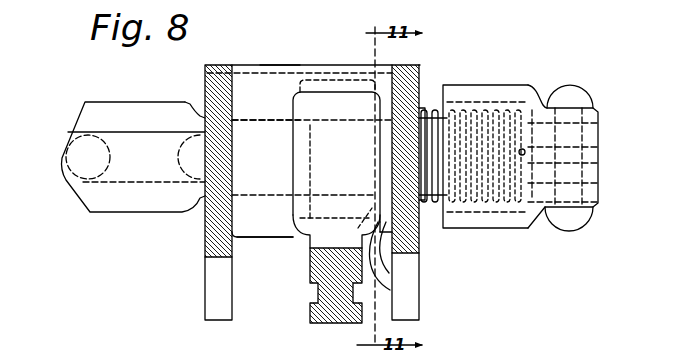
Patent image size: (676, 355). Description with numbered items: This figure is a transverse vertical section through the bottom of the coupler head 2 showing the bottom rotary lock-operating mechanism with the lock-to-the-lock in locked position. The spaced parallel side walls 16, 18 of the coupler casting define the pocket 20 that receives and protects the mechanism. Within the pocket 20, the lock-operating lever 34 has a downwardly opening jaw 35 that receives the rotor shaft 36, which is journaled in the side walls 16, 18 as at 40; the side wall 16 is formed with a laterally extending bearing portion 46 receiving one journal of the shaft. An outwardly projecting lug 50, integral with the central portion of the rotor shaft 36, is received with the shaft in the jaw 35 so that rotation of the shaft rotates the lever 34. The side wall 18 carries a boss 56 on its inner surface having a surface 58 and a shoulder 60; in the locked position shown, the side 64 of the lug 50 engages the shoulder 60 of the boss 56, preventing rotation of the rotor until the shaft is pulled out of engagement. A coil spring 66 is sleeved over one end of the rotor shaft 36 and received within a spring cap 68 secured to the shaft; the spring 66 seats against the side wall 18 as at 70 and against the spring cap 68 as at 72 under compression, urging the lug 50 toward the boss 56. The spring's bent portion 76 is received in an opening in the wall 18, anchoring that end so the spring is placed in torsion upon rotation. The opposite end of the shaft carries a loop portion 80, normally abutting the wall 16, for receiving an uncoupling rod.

The coupler head 2 is at (414, 63).
The side wall 16 is at (205, 258).
The side wall 18 is at (419, 259).
The pocket 20 is at (240, 292).
The lock-operating lever 34 is at (318, 278).
The jaw 35 is at (317, 98).
The rotor shaft 36 is at (197, 116).
The journaling of shaft in side walls 40 is at (205, 225).
The bearing portion 46 is at (268, 222).
The lug 50 is at (336, 228).
The boss 56 is at (419, 232).
The surface of boss 58 is at (377, 176).
The shoulder 60 is at (389, 276).
The side of lug 64 is at (390, 290).
The coil spring 66 is at (448, 100).
The spring cap 68 is at (597, 112).
The spring seat on side wall 70 is at (442, 108).
The spring seat on spring cap 72 is at (553, 97).
The bent portion 76 is at (424, 105).
The loop portion 80 is at (90, 204).